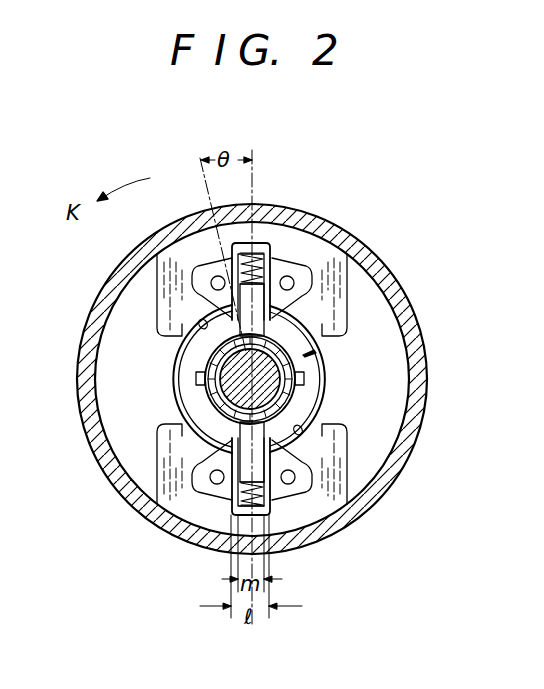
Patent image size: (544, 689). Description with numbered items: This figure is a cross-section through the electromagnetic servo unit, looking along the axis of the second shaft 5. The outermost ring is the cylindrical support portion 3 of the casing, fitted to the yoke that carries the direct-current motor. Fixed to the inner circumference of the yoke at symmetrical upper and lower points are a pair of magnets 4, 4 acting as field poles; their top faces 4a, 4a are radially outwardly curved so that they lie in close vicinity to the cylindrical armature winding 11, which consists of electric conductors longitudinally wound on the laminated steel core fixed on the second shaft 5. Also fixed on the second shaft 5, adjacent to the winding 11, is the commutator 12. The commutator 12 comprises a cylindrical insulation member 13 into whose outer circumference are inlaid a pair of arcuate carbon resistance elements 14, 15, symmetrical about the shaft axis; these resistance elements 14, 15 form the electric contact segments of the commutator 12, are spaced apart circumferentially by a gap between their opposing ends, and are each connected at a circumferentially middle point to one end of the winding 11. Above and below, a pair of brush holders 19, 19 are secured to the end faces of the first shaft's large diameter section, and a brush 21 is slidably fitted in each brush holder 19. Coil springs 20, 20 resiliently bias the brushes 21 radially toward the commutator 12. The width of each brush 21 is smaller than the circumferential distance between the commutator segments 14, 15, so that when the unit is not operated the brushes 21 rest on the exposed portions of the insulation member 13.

The cylindrical support portion 3 is at (84, 342).
The magnets (field poles) 4 is at (335, 280).
The top faces of the magnets 4a is at (202, 322).
The second shaft 5 is at (213, 397).
The armature winding 11 is at (318, 372).
The commutator 12 is at (316, 352).
The cylindrical insulation member 13 is at (205, 356).
The arcuate carbon resistance element 14 is at (196, 379).
The arcuate carbon resistance element 15 is at (304, 389).
The brush holder 19 is at (262, 250).
The coil spring 20 is at (258, 297).
The brush 21 is at (275, 297).